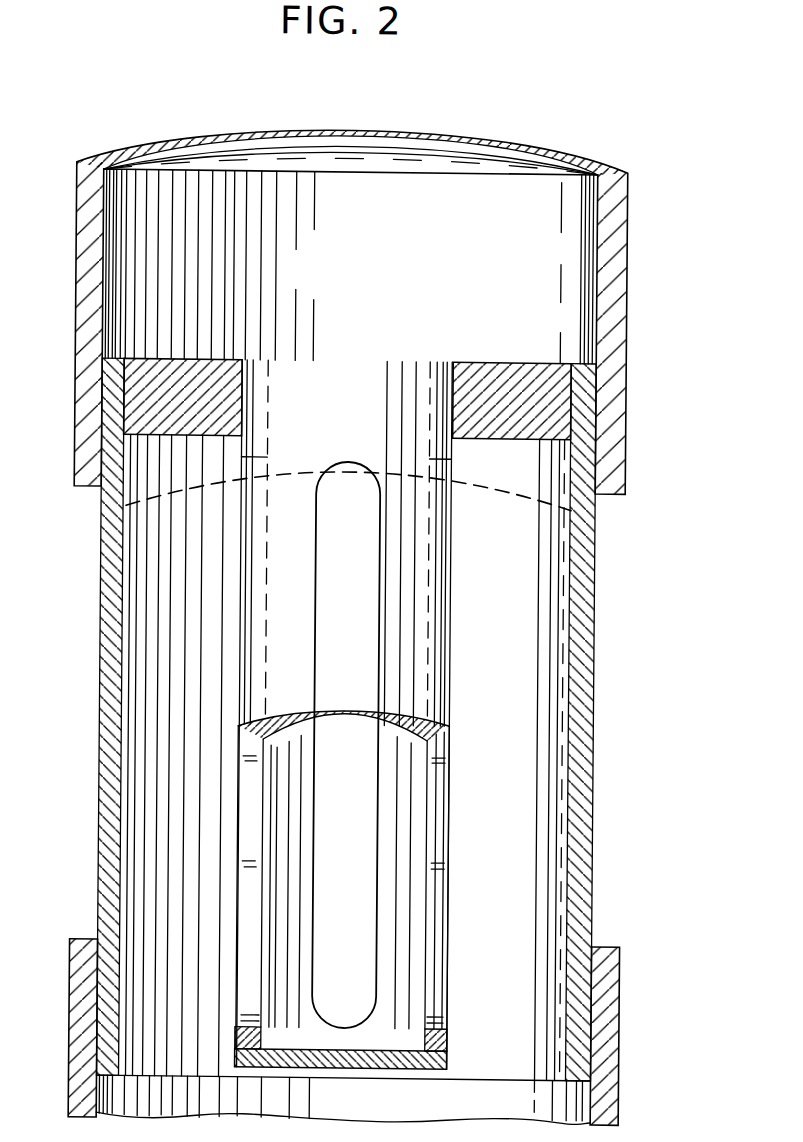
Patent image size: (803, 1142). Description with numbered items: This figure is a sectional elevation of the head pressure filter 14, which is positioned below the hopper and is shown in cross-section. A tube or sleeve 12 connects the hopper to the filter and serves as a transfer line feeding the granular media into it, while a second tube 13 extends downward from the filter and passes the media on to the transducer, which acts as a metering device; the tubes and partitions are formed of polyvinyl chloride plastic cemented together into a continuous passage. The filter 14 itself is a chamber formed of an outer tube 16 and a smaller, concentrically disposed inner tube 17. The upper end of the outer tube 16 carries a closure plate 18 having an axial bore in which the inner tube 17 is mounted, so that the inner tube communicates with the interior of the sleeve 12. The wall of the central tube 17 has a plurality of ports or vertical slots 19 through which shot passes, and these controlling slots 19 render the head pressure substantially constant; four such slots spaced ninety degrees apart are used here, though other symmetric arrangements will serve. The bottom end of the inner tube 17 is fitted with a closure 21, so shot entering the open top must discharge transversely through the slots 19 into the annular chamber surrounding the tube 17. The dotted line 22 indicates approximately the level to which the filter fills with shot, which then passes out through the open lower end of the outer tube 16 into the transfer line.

The tube or sleeve 12 is at (624, 330).
The second tube 13 is at (611, 982).
The head pressure filter 14 is at (596, 633).
The outer tube 16 is at (596, 674).
The inner tube 17 is at (452, 772).
The closure plate 18 is at (493, 360).
The vertical slots 19 is at (320, 592).
The closure 21 is at (390, 1052).
The dotted line 22 is at (283, 470).